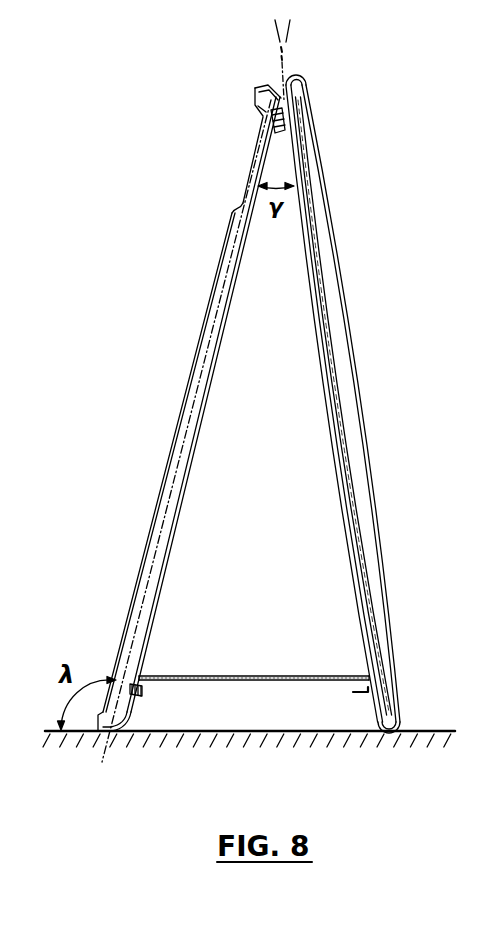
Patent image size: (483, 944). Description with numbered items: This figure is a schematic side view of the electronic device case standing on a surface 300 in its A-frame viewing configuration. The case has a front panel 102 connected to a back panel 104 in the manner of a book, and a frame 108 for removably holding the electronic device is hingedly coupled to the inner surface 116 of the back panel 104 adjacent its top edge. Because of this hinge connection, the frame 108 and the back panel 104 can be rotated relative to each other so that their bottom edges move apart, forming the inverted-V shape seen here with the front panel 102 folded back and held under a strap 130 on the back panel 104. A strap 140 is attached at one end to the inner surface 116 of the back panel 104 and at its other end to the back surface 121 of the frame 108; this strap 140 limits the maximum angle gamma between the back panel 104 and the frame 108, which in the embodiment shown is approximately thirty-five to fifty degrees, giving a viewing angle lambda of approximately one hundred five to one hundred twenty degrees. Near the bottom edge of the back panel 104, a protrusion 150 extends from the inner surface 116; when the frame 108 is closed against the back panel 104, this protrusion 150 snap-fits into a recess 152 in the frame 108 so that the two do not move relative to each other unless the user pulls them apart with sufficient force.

The back panel 104 is at (282, 77).
The strap 130 is at (317, 140).
The inner surface 116 is at (340, 506).
The front panel 102 is at (321, 267).
The frame 108 is at (217, 298).
The back surface 121 is at (193, 452).
The recess 152 is at (141, 691).
The strap 140 is at (140, 680).
The protrusion 150 is at (362, 695).
The surface 300 is at (425, 730).